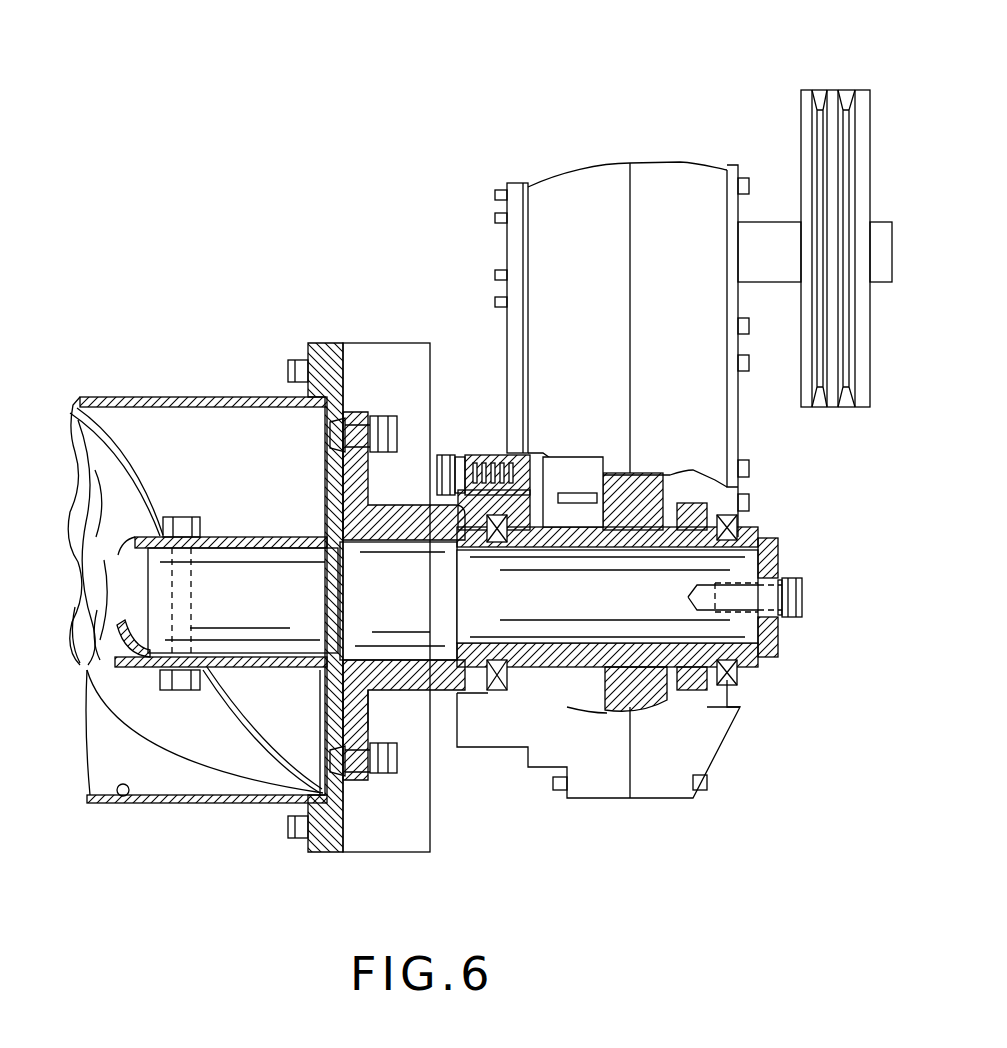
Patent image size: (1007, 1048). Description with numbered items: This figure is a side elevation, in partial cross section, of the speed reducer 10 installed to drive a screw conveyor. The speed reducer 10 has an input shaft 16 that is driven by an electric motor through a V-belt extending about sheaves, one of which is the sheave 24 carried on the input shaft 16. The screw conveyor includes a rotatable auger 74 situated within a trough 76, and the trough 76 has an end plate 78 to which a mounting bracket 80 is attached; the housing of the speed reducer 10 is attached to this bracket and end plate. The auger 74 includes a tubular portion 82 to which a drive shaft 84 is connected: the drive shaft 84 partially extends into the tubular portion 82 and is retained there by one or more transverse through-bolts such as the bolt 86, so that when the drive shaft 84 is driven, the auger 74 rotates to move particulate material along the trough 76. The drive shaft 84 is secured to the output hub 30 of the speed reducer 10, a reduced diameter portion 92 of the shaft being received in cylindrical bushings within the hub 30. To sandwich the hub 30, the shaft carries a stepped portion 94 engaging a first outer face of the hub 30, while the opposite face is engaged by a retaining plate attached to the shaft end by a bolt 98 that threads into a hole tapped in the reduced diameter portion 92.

The speed reducer 10 is at (576, 178).
The input shaft 16 is at (783, 240).
The sheave 24 is at (870, 105).
The output hub 30 is at (585, 670).
The auger 74 is at (212, 757).
The trough 76 is at (124, 797).
The end plate 78 is at (345, 825).
The mounting bracket 80 is at (470, 452).
The tubular portion 82 is at (95, 565).
The drive shaft 84 is at (283, 576).
The through-bolt 86 is at (182, 517).
The reduced diameter portion 92 is at (655, 605).
The stepped portion 94 is at (410, 612).
The bolt 98 is at (808, 590).